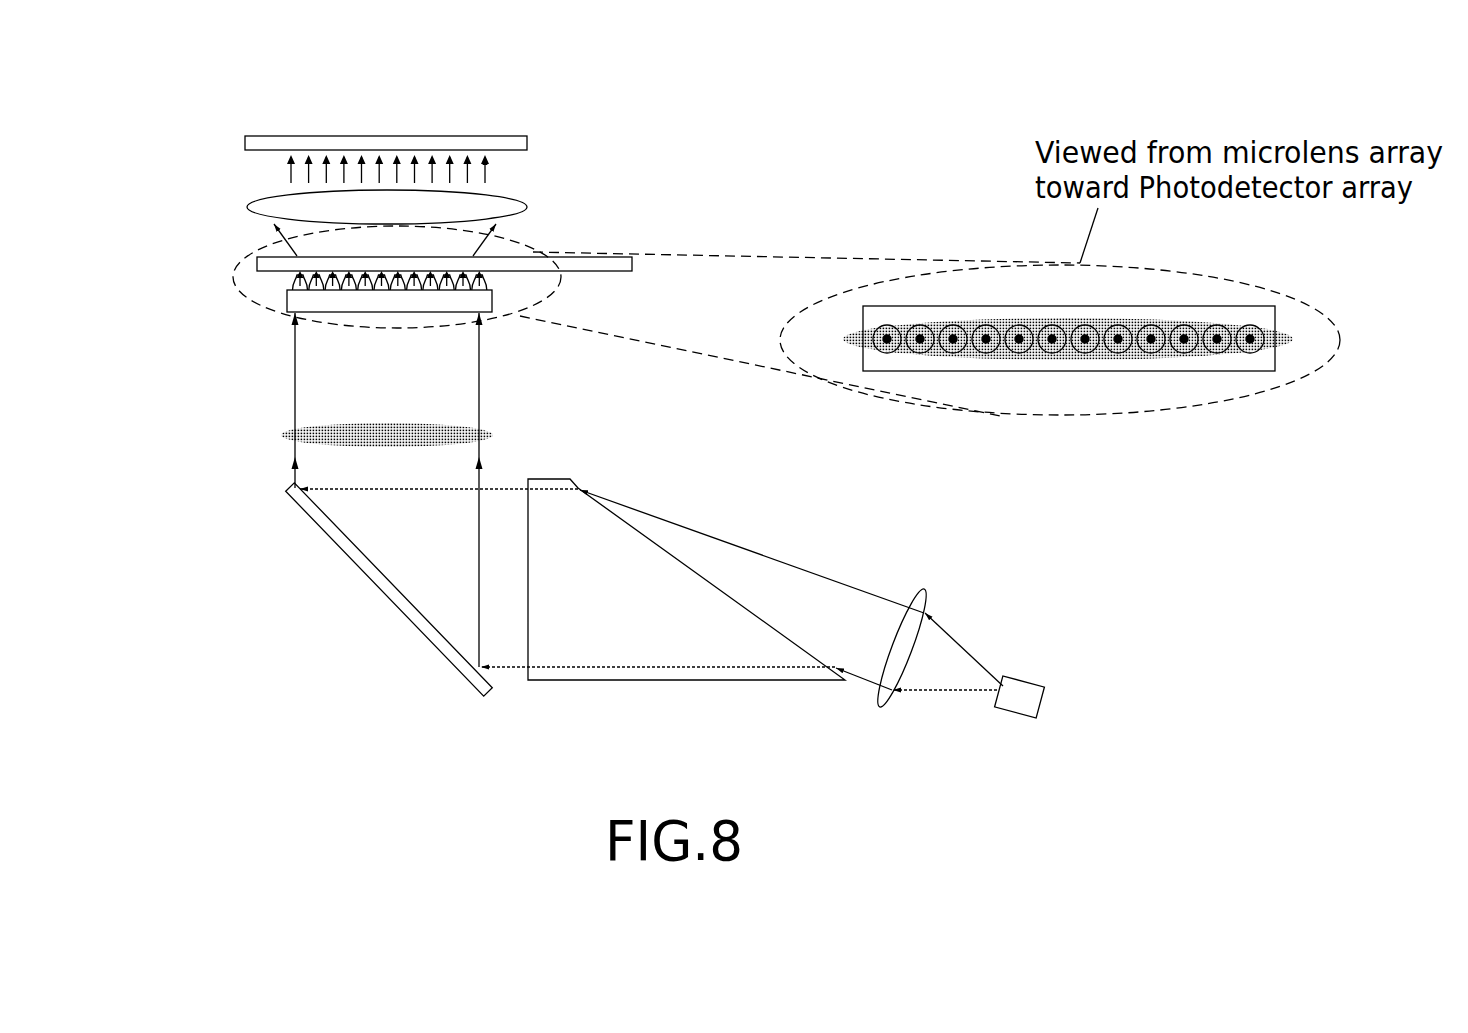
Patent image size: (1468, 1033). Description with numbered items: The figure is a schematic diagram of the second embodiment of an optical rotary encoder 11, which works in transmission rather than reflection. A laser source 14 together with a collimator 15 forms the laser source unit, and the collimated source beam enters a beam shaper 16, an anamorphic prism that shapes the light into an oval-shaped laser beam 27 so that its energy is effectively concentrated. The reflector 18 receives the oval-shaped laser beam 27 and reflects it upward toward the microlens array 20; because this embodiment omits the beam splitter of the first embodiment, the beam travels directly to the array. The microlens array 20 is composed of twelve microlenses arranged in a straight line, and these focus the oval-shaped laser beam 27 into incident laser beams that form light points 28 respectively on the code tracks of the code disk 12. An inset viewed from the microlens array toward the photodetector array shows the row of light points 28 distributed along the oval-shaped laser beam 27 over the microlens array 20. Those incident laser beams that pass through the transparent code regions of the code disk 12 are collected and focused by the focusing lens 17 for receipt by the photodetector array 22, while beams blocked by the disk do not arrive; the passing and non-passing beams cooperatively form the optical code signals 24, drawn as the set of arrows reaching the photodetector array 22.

The optical rotary encoder 11 is at (188, 117).
The code disk 12 is at (632, 266).
The laser source 14 is at (1014, 676).
The collimator 15 is at (928, 587).
The beam shaper 16 is at (580, 683).
The focusing lens 17 is at (517, 203).
The reflector 18 is at (357, 572).
The microlens array 20 is at (283, 297).
The photodetector array 22 is at (362, 134).
The optical code signals 24 is at (280, 175).
The oval-shaped laser beam 27 is at (498, 433).
The light points 28 is at (497, 278).